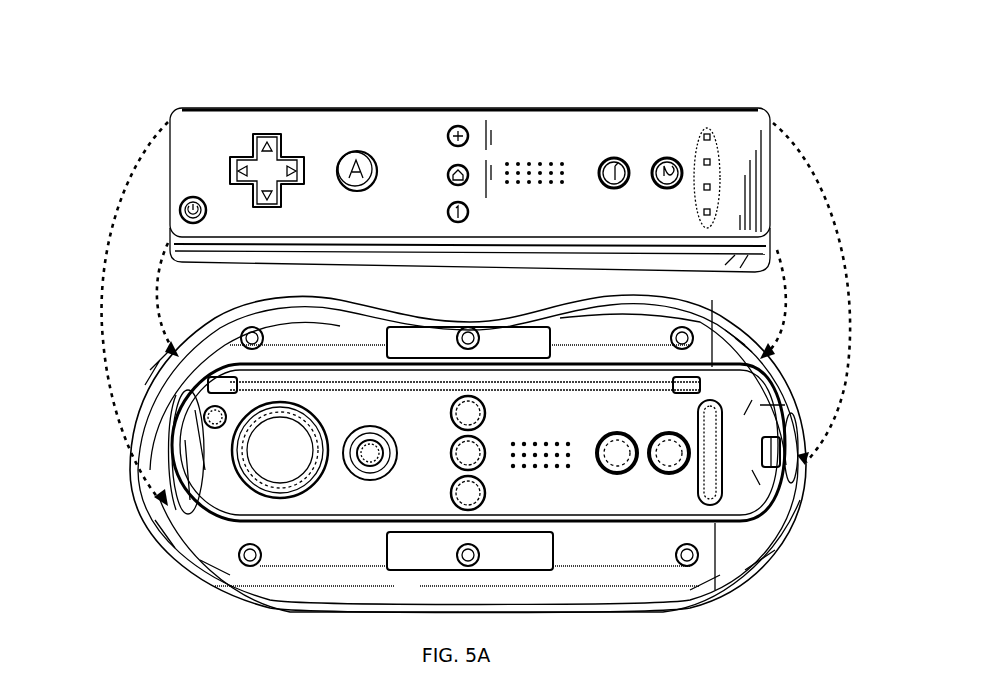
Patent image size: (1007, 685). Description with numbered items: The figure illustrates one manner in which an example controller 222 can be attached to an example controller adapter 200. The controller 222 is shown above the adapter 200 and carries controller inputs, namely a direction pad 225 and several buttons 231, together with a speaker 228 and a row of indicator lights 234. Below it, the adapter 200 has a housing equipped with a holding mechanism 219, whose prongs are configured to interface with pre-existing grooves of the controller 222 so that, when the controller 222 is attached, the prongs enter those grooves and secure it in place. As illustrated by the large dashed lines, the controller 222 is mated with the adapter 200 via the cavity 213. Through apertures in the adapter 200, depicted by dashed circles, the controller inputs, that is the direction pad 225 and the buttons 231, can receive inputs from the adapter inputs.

The controller adapter 200 is at (130, 513).
The cavity 213 is at (170, 445).
The holding mechanism 219 is at (765, 542).
The controller 222 is at (499, 99).
The direction pad 225 is at (258, 138).
The speaker 228 is at (547, 160).
The buttons 231 is at (195, 197).
The indicator lights 234 is at (710, 128).